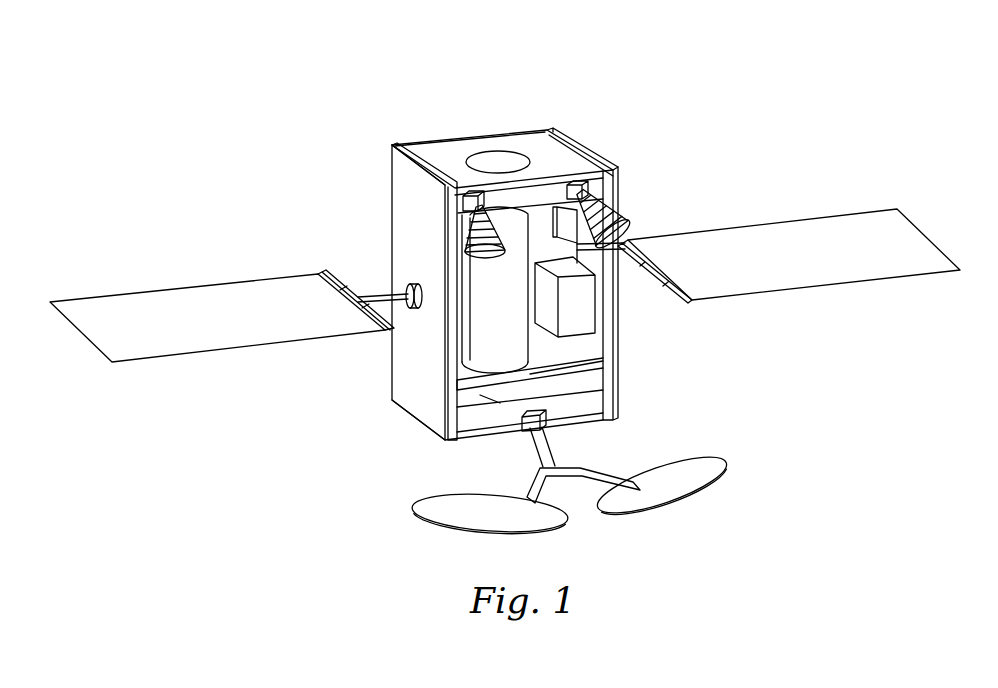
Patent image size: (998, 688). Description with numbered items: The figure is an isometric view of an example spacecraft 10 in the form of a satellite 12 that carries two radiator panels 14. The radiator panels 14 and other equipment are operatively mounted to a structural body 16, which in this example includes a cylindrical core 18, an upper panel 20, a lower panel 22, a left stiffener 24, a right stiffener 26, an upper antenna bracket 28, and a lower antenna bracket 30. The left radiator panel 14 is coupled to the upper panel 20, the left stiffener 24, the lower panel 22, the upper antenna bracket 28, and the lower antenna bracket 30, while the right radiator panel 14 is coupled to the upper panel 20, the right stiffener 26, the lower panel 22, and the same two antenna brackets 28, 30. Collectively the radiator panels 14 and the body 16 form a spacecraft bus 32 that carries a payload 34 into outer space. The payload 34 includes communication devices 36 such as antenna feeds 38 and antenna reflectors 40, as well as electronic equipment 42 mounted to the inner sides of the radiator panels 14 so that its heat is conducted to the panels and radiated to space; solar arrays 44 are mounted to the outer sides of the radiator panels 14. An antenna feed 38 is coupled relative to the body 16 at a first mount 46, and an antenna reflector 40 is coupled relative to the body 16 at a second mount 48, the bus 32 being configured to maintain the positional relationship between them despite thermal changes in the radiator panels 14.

The spacecraft 10 is at (703, 72).
The satellite 12 is at (684, 72).
The radiator panel 14 is at (392, 208).
The structural body 16 is at (500, 128).
The cylindrical core 18 is at (530, 245).
The upper panel 20 is at (453, 143).
The lower panel 22 is at (603, 372).
The left stiffener 24 is at (460, 365).
The right stiffener 26 is at (553, 360).
The upper antenna bracket 28 is at (562, 173).
The lower antenna bracket 30 is at (573, 423).
The spacecraft bus 32 is at (537, 65).
The payload 34 is at (417, 113).
The communication device 36 is at (433, 103).
The antenna feed 38 is at (463, 237).
The antenna reflector 40 is at (443, 495).
The electronic equipment 42 is at (582, 247).
The solar array 44 is at (165, 290).
The first mount 46 is at (488, 198).
The second mount 48 is at (521, 422).